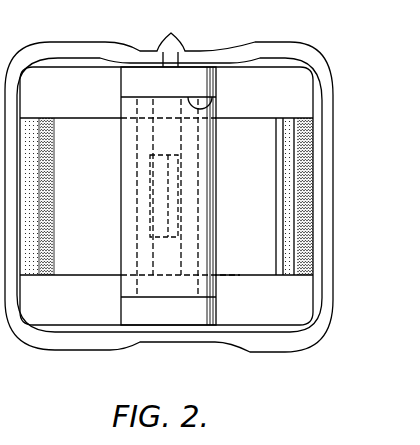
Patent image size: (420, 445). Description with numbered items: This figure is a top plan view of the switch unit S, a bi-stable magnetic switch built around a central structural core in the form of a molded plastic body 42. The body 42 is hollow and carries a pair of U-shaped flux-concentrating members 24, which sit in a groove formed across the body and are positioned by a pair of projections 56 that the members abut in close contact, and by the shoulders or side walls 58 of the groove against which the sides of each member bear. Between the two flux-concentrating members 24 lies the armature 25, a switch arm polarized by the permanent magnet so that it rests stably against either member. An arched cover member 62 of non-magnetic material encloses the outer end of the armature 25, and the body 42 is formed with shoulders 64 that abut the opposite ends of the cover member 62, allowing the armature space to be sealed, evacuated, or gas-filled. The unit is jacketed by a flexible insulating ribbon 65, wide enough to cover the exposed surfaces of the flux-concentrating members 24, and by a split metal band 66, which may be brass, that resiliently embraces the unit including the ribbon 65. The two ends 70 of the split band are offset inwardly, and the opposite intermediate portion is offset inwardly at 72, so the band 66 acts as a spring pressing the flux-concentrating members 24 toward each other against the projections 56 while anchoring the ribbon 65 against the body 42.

The split metal band 66 is at (68, 44).
The ends of the split band 70 is at (171, 40).
The shoulders 64 is at (216, 101).
The switch unit S is at (296, 43).
The projections 56 is at (175, 129).
The shoulders or side walls of the groove 58 is at (42, 270).
The flux-concentrating members 24 is at (166, 196).
The arched cover member 62 is at (128, 181).
The armature 25 is at (150, 223).
The flexible ribbon 65 is at (313, 179).
The intermediate portion of the split band 72 is at (172, 333).
The body 42 is at (274, 332).